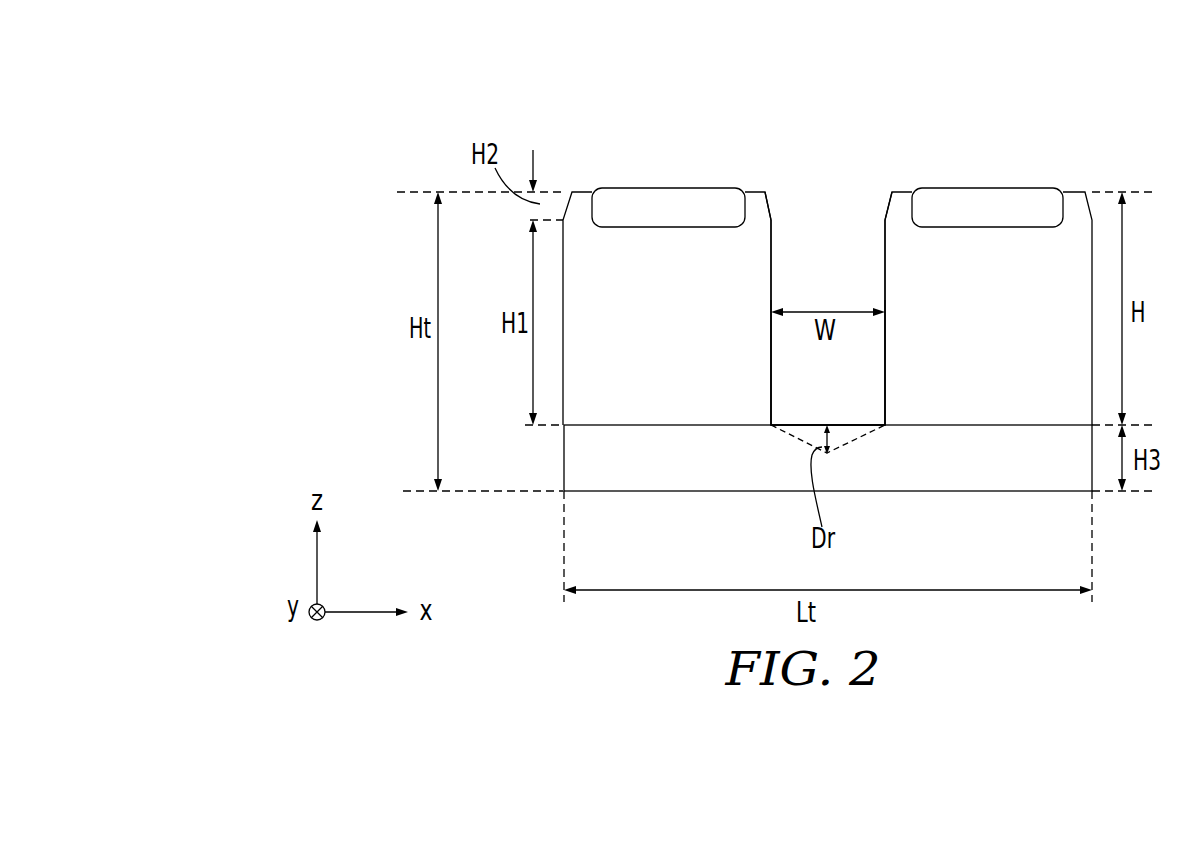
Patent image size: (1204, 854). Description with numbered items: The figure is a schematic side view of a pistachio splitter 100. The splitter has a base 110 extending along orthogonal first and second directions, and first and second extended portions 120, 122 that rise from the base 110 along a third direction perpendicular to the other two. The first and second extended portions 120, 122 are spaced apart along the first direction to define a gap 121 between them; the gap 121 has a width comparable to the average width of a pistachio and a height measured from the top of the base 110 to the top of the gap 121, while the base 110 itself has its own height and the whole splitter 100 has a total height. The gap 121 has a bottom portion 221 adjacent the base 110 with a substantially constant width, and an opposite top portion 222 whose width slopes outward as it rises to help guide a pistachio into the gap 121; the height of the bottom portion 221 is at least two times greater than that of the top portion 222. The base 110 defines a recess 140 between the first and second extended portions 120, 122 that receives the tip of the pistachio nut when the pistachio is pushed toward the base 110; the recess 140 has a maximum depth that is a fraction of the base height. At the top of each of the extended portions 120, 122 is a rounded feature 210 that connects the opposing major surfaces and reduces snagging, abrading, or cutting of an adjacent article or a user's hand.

The pistachio splitter 100 is at (338, 90).
The base 110 is at (755, 452).
The first extended portion 120 is at (632, 263).
The gap 121 is at (821, 257).
The second extended portion 122 is at (968, 265).
The recess 140 is at (847, 435).
The rounded feature 210 is at (673, 207).
The bottom portion 221 is at (833, 374).
The top portion 222 is at (849, 197).